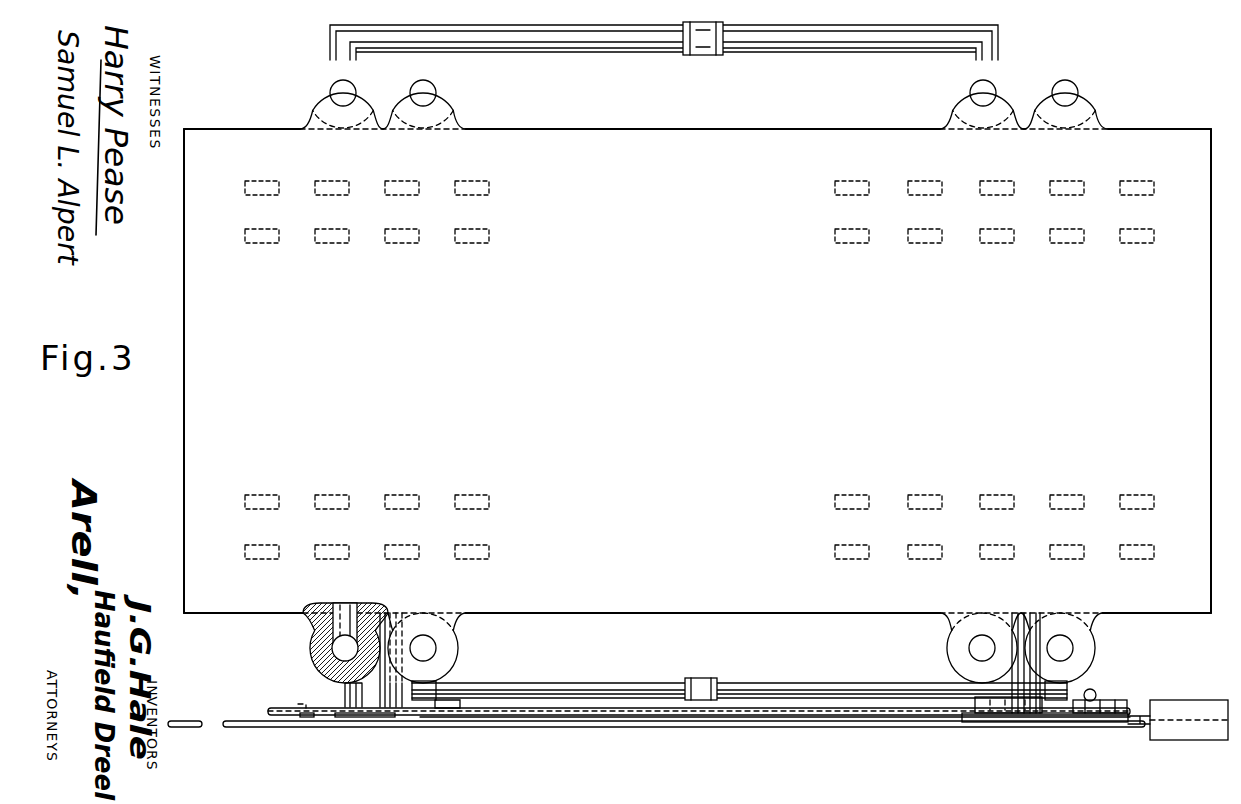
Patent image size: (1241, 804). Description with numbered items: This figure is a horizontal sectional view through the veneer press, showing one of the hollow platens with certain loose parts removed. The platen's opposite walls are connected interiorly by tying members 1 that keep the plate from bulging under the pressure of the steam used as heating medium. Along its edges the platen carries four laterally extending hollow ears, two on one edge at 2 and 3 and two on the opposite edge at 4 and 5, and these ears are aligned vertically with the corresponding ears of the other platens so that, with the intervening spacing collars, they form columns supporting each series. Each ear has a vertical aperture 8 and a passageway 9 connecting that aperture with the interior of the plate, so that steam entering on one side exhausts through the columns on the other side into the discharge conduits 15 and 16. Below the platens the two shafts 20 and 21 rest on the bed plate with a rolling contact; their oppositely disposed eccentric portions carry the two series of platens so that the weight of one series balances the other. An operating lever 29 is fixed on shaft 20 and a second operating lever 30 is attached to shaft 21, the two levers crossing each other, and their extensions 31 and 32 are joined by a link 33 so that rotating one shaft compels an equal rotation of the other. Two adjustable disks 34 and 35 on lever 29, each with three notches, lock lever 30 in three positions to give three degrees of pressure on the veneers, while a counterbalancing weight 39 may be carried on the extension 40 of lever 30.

The tying members 1 is at (260, 187).
The hollow ear 2 is at (312, 86).
The hollow ear 3 is at (458, 656).
The hollow ear 4 is at (455, 97).
The hollow ear 5 is at (312, 651).
The vertical apertures 8 is at (414, 91).
The passageway 9 is at (348, 604).
The discharge conduit 15 is at (745, 52).
The discharge conduit 16 is at (760, 684).
The shaft 20 is at (392, 712).
The shaft 21 is at (1010, 722).
The operating lever 29 is at (280, 709).
The operating lever 30 is at (560, 723).
The extension 31 is at (445, 714).
The extension 32 is at (1122, 703).
The link 33 is at (790, 715).
The adjustable disk 34 is at (345, 718).
The adjustable disk 35 is at (305, 718).
The counterbalancing weight 39 is at (1195, 706).
The extension 40 is at (1138, 725).